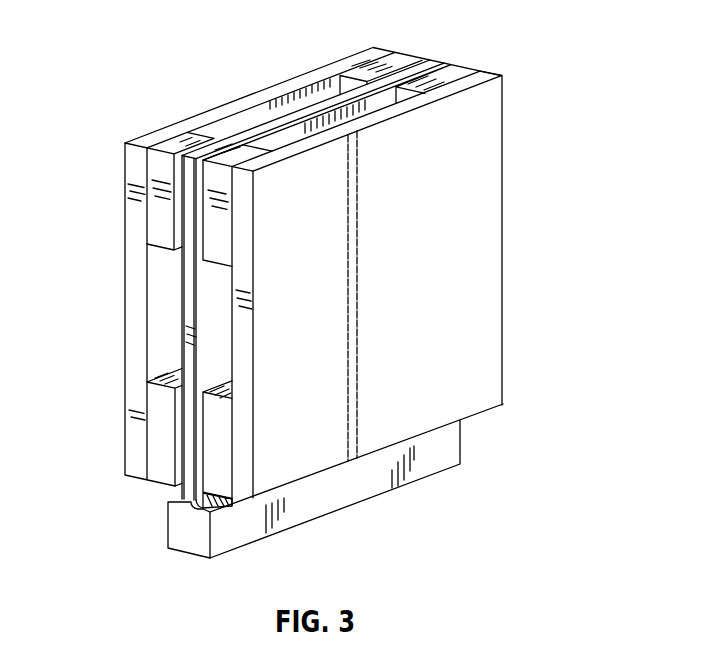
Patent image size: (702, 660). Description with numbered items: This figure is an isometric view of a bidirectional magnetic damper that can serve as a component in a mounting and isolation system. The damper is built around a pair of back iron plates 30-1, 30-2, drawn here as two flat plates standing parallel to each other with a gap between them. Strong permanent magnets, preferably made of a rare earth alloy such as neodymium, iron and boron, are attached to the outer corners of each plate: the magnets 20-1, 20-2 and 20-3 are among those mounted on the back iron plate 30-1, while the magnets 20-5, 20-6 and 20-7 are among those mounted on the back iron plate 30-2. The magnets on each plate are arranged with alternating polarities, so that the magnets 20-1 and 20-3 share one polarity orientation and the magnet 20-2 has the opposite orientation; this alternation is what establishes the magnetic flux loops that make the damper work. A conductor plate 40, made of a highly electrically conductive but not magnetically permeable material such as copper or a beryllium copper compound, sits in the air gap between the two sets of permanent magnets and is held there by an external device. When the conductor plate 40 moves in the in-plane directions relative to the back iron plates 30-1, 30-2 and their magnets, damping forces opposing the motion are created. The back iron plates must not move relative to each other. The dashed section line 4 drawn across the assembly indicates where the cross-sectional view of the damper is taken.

The permanent magnet 20-1 is at (160, 484).
The permanent magnet 20-2 is at (162, 183).
The permanent magnet 20-3 is at (397, 56).
The permanent magnet 20-5 is at (215, 410).
The permanent magnet 20-6 is at (213, 228).
The permanent magnet 20-7 is at (458, 73).
The back iron plate 30-1 is at (126, 374).
The back iron plate 30-2 is at (490, 305).
The conductor plate 40 is at (446, 449).
The section line 4 is at (312, 98).